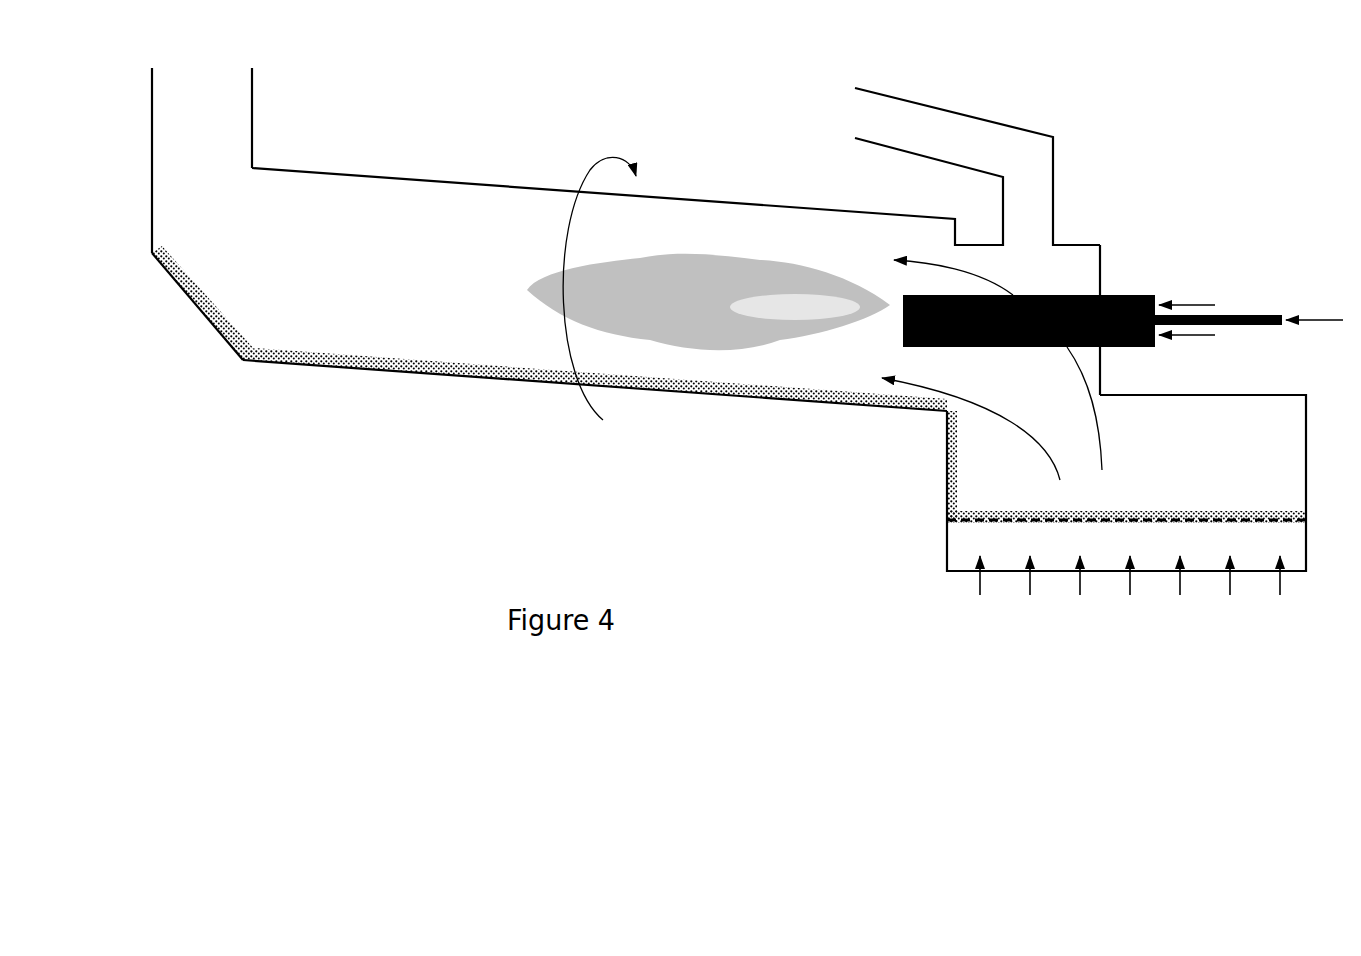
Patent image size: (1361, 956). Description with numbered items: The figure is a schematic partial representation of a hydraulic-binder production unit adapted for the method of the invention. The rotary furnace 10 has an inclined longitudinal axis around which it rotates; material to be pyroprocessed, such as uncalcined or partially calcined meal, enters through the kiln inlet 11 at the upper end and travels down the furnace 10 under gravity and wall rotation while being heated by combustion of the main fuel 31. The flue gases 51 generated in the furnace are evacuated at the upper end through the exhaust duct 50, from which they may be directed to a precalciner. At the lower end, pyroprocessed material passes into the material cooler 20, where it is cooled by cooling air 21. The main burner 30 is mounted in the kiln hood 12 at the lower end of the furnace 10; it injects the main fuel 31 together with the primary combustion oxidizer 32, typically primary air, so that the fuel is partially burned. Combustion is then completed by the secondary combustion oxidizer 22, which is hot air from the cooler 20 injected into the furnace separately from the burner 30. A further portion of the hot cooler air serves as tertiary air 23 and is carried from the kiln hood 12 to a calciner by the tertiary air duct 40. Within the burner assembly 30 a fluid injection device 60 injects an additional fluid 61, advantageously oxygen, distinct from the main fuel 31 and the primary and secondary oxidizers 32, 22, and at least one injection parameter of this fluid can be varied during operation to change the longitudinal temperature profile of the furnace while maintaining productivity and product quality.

The rotary furnace 10 is at (420, 375).
The kiln inlet 11 is at (245, 293).
The kiln hood 12 is at (1080, 245).
The material cooler 20 is at (947, 523).
The cooling air 21 is at (1130, 598).
The secondary combustion oxidizer 22 is at (992, 413).
The tertiary air 23 is at (987, 144).
The main burner 30 is at (1142, 295).
The main fuel 31 is at (1204, 306).
The primary combustion oxidizer 32 is at (1204, 338).
The tertiary air duct 40 is at (1020, 128).
The exhaust duct 50 is at (252, 117).
The flue gases 51 is at (202, 199).
The fluid injection device 60 is at (1262, 315).
The additional fluid 61 is at (1314, 333).